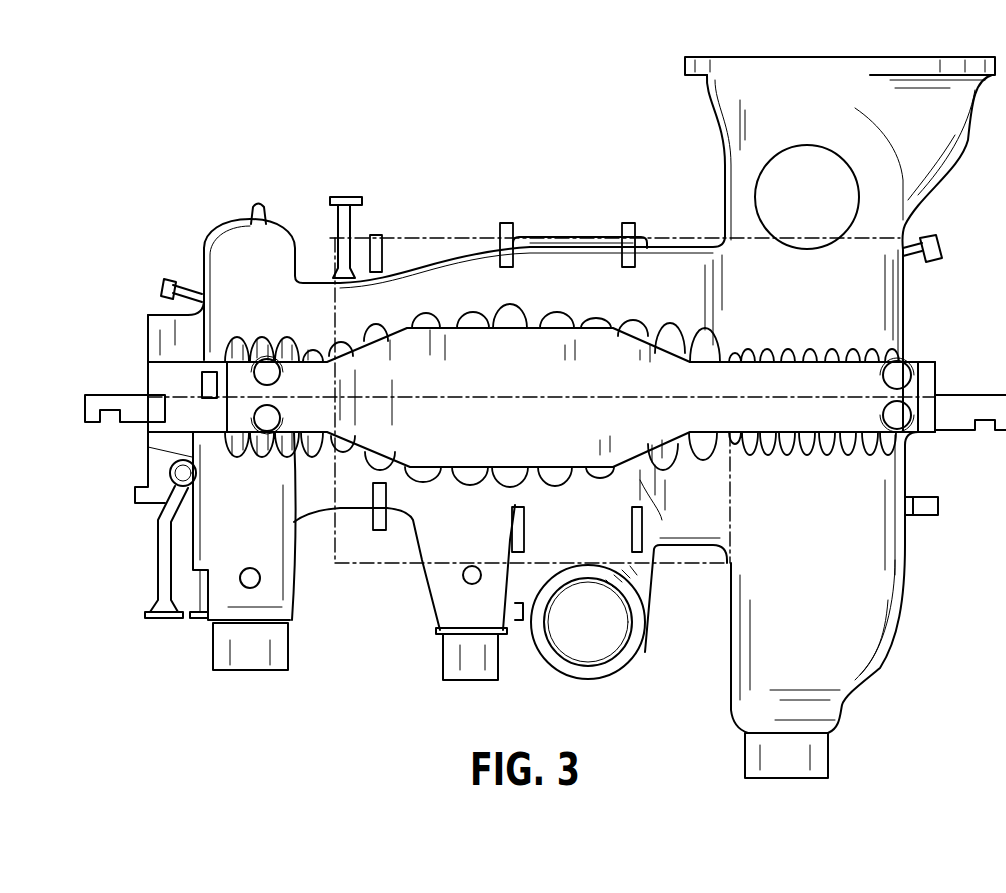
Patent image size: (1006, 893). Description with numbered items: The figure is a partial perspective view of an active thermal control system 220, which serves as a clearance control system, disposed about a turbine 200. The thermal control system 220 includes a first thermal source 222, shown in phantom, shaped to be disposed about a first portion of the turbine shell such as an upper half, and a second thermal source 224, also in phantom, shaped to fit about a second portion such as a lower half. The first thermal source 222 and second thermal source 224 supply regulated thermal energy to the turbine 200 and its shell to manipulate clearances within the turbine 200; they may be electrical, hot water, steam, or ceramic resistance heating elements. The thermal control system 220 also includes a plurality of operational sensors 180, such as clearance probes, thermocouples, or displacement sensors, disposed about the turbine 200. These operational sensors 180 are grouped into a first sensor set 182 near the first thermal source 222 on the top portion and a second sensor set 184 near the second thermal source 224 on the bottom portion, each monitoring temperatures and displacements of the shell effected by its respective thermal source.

The turbine 200 is at (185, 148).
The operational sensors 180 is at (262, 343).
The first sensor set 182 is at (647, 323).
The second sensor set 184 is at (513, 522).
The active thermal control system 220 is at (747, 497).
The first thermal source 222 is at (883, 287).
The second thermal source 224 is at (690, 548).